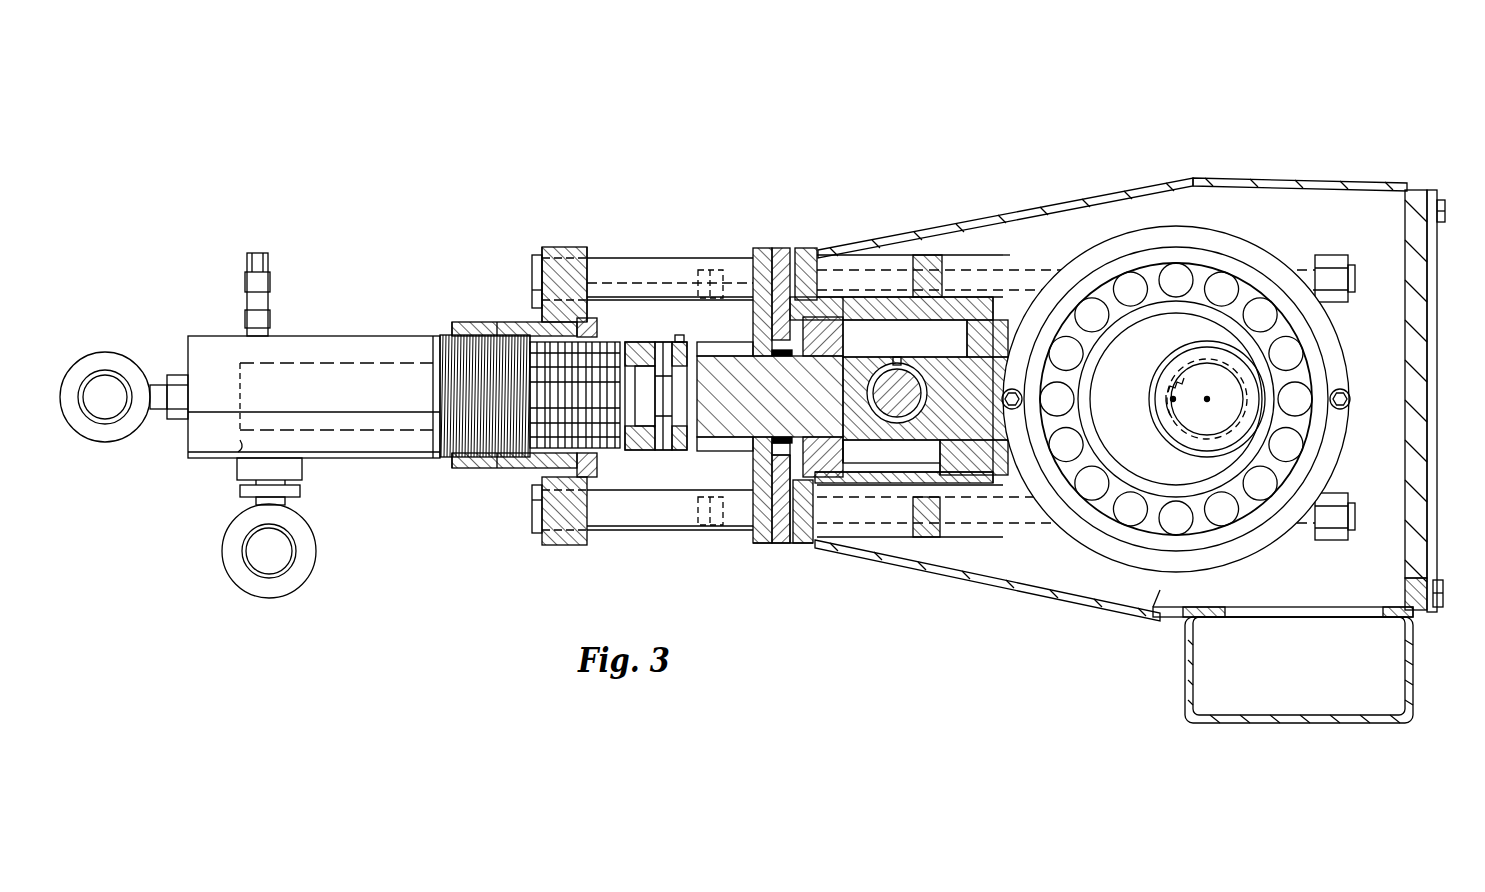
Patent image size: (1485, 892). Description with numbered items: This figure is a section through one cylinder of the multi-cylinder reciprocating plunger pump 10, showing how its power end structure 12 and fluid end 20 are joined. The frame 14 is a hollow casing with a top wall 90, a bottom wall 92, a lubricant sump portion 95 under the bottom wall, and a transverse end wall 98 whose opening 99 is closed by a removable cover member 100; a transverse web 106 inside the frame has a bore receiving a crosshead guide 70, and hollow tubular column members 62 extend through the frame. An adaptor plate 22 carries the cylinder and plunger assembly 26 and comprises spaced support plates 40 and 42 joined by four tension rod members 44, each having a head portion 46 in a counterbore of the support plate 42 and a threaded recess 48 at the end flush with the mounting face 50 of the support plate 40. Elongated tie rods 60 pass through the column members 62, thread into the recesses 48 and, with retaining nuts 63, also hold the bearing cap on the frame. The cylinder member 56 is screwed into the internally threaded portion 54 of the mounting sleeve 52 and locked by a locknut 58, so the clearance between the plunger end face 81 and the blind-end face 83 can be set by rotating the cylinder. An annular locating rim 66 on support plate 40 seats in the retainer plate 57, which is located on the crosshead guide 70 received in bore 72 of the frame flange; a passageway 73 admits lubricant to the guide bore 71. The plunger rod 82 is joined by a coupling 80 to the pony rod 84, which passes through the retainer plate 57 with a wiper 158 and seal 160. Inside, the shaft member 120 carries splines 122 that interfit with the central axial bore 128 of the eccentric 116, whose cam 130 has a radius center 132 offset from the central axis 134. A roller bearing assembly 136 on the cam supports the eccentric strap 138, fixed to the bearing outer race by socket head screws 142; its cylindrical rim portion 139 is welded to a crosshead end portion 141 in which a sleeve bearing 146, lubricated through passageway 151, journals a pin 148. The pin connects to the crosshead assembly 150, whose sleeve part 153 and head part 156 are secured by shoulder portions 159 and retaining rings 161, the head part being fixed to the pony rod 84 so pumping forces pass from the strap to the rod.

The multi-cylinder reciprocating plunger pump 10 is at (1065, 170).
The power end structure 12 is at (1146, 432).
The frame 14 is at (1253, 180).
The fluid end 20 is at (540, 247).
The adaptor plate 22 is at (588, 247).
The cylinder and plunger assembly 26 is at (372, 336).
The support plate 40 is at (760, 248).
The support plate 42 is at (572, 247).
The tension rod member 44 is at (685, 262).
The head portion 46 is at (532, 281).
The threaded recess 48 is at (725, 270).
The mounting face 50 is at (775, 545).
The mounting sleeve 52 is at (505, 468).
The internally threaded portion 54 is at (520, 468).
The cylinder member 56 is at (490, 322).
The retainer plate 57 is at (782, 248).
The locknut 58 is at (477, 468).
The tie rod 60 is at (877, 272).
The tubular column member 62 is at (948, 258).
The retaining nut 63 is at (1340, 260).
The annular locating rim 66 is at (772, 480).
The crosshead guide 70 is at (888, 483).
The bore 71 is at (852, 483).
The bore 72 is at (805, 543).
The passageway 73 is at (850, 297).
The coupling 80 is at (628, 342).
The end face 81 is at (250, 365).
The plunger rod 82 is at (620, 410).
The face 83 is at (240, 440).
The pony rod 84 is at (770, 358).
The top wall 90 is at (985, 218).
The bottom wall 92 is at (1050, 592).
The lubricant sump portion 95 is at (1413, 706).
The transverse end wall 98 is at (1418, 607).
The opening 99 is at (1422, 580).
The cover member 100 is at (1437, 447).
The transverse web 106 is at (995, 272).
The eccentric 116 is at (1193, 327).
The shaft member 120 is at (1248, 378).
The splines 122 is at (1168, 378).
The central axial bore 128 is at (1178, 420).
The cam 130 is at (1170, 532).
The radius center 132 is at (1165, 392).
The central axis 134 is at (1207, 405).
The roller bearing assembly 136 is at (1258, 524).
The eccentric strap 138 is at (1160, 613).
The cylindrical rim portion 139 is at (1232, 560).
The crosshead end portion 141 is at (980, 483).
The socket head screw 142 is at (1022, 399).
The sleeve bearing 146 is at (870, 430).
The pin 148 is at (925, 425).
The crosshead assembly 150 is at (945, 490).
The passageway 151 is at (897, 363).
The sleeve part 153 is at (888, 315).
The head part 156 is at (775, 465).
The wiper 158 is at (772, 352).
The shoulder portion 159 is at (842, 356).
The seal 160 is at (770, 330).
The retaining ring 161 is at (795, 436).